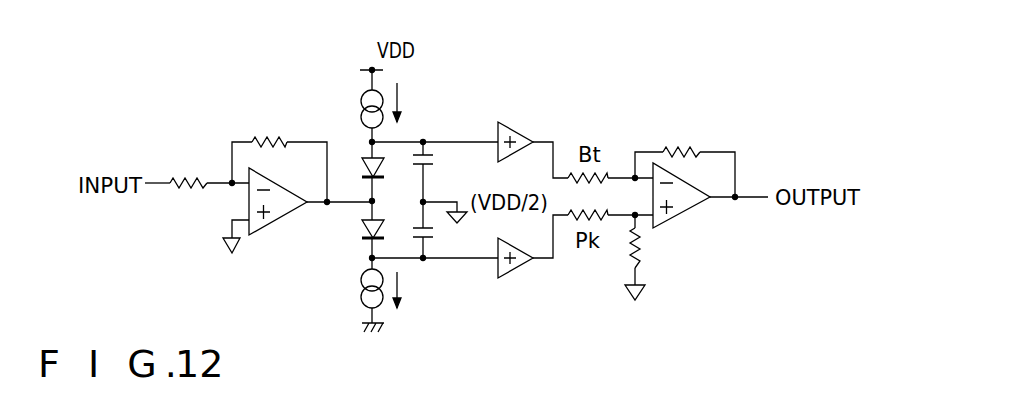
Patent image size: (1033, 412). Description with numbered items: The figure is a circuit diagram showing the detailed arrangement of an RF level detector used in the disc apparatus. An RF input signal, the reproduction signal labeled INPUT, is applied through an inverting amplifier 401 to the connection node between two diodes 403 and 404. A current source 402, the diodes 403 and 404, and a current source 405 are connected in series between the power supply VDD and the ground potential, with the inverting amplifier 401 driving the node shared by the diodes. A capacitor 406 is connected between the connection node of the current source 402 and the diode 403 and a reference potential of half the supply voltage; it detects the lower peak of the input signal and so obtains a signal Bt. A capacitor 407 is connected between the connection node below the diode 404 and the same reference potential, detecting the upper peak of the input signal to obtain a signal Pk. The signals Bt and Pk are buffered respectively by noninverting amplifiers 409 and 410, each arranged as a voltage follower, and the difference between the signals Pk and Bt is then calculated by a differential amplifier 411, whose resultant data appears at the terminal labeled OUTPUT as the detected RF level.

The inverting amplifier 401 is at (320, 178).
The current source 402 is at (361, 98).
The diode 403 is at (366, 159).
The diode 404 is at (362, 231).
The current source 405 is at (361, 296).
The capacitor 406 is at (437, 166).
The capacitor 407 is at (437, 240).
The noninverting amplifier 409 is at (519, 133).
The noninverting amplifier 410 is at (520, 270).
The differential amplifier 411 is at (692, 214).